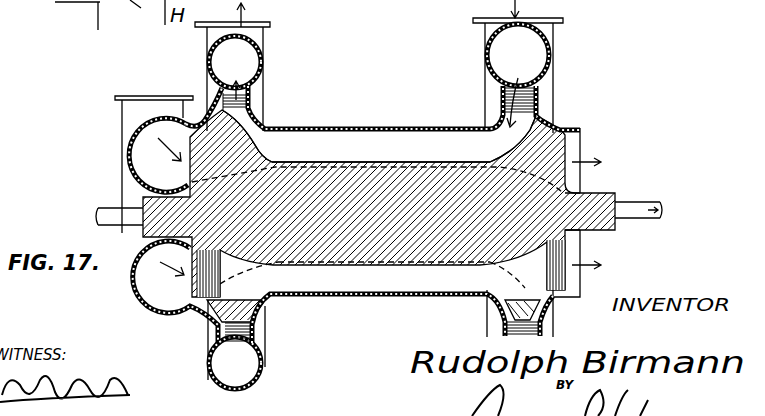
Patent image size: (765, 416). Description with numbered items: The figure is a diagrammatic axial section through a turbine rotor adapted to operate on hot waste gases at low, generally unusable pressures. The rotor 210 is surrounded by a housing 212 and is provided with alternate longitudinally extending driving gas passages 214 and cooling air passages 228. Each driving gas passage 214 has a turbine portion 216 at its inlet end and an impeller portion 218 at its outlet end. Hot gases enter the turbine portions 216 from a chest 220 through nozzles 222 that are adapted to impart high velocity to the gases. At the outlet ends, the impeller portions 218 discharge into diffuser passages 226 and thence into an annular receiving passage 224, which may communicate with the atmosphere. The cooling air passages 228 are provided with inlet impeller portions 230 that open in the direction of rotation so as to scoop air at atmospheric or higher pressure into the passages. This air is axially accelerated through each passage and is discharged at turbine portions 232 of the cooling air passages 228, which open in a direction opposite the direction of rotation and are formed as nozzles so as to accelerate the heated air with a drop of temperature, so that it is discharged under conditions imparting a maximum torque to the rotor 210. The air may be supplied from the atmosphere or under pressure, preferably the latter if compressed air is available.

The rotor 210 is at (352, 255).
The housing 212 is at (330, 127).
The driving gas passages 214 is at (385, 147).
The turbine portions 216 is at (536, 118).
The impeller portions 218 is at (248, 118).
The chest 220 is at (549, 46).
The nozzles 222 is at (538, 95).
The annular receiving passage 224 is at (211, 60).
The diffuser passages 226 is at (250, 100).
The cooling air passages 228 is at (382, 282).
The inlet impeller portions 230 is at (200, 278).
The turbine portions 232 is at (552, 279).